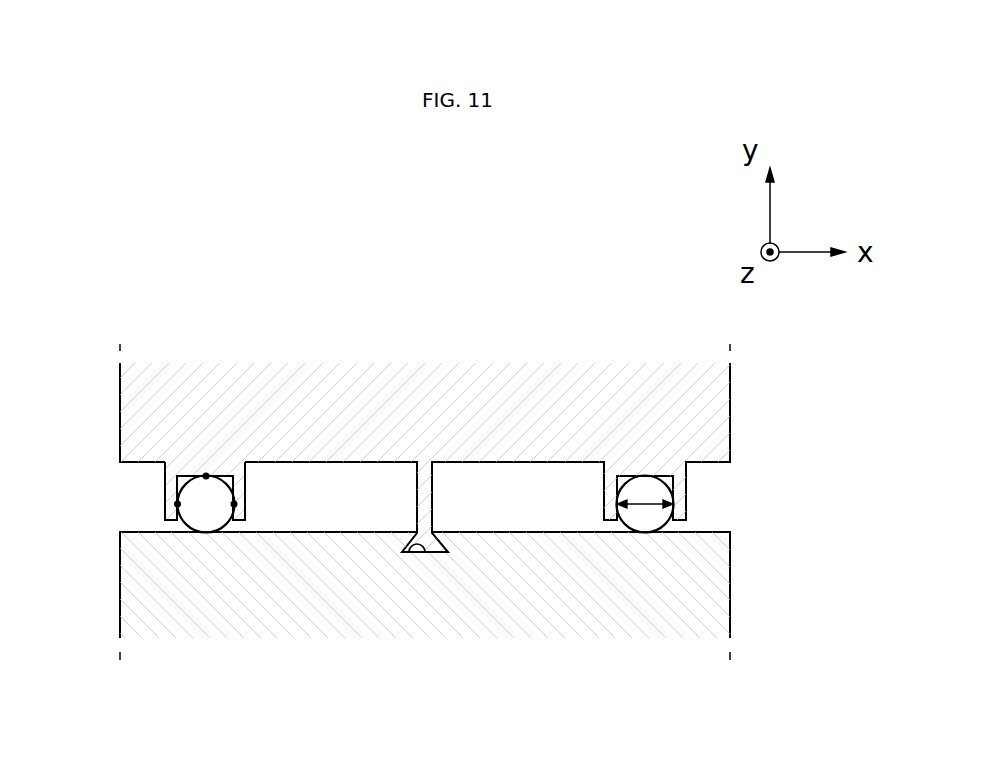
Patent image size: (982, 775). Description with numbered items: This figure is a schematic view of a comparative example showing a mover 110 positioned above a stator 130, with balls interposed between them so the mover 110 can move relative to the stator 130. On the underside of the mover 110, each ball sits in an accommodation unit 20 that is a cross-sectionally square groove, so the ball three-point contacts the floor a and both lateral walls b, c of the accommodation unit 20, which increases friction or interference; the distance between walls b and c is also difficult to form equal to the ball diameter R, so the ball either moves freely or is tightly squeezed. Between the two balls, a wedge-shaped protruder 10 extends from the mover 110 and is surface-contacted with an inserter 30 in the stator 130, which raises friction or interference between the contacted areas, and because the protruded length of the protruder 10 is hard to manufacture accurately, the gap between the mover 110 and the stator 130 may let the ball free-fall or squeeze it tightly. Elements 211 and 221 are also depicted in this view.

The wedge-shaped protruder 10 is at (437, 553).
The accommodation unit 20 is at (245, 487).
The inserter 30 is at (412, 553).
The mover 110 is at (730, 406).
The stator 130 is at (731, 592).
The first seal ring 211 is at (197, 523).
The second seal ring 221 is at (666, 517).